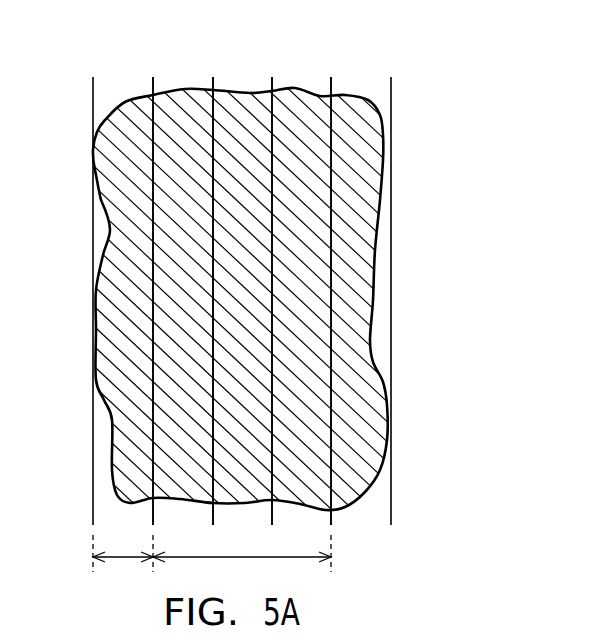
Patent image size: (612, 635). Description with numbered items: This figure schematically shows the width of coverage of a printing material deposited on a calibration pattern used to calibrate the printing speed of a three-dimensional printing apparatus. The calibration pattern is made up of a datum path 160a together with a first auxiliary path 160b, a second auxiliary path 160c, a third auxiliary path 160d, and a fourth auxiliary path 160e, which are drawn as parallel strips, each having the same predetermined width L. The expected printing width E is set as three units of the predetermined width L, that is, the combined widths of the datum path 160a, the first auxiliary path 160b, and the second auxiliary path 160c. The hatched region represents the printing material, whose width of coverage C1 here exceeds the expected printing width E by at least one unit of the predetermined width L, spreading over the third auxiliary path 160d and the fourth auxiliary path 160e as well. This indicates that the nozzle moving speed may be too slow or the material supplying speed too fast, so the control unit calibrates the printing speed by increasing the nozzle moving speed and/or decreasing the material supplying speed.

The datum path 160a is at (243, 86).
The first auxiliary path 160b is at (306, 85).
The second auxiliary path 160c is at (184, 85).
The third auxiliary path 160d is at (369, 89).
The fourth auxiliary path 160e is at (123, 89).
The width of coverage C1 is at (385, 157).
The predetermined width L is at (123, 550).
The expected printing width E is at (242, 550).